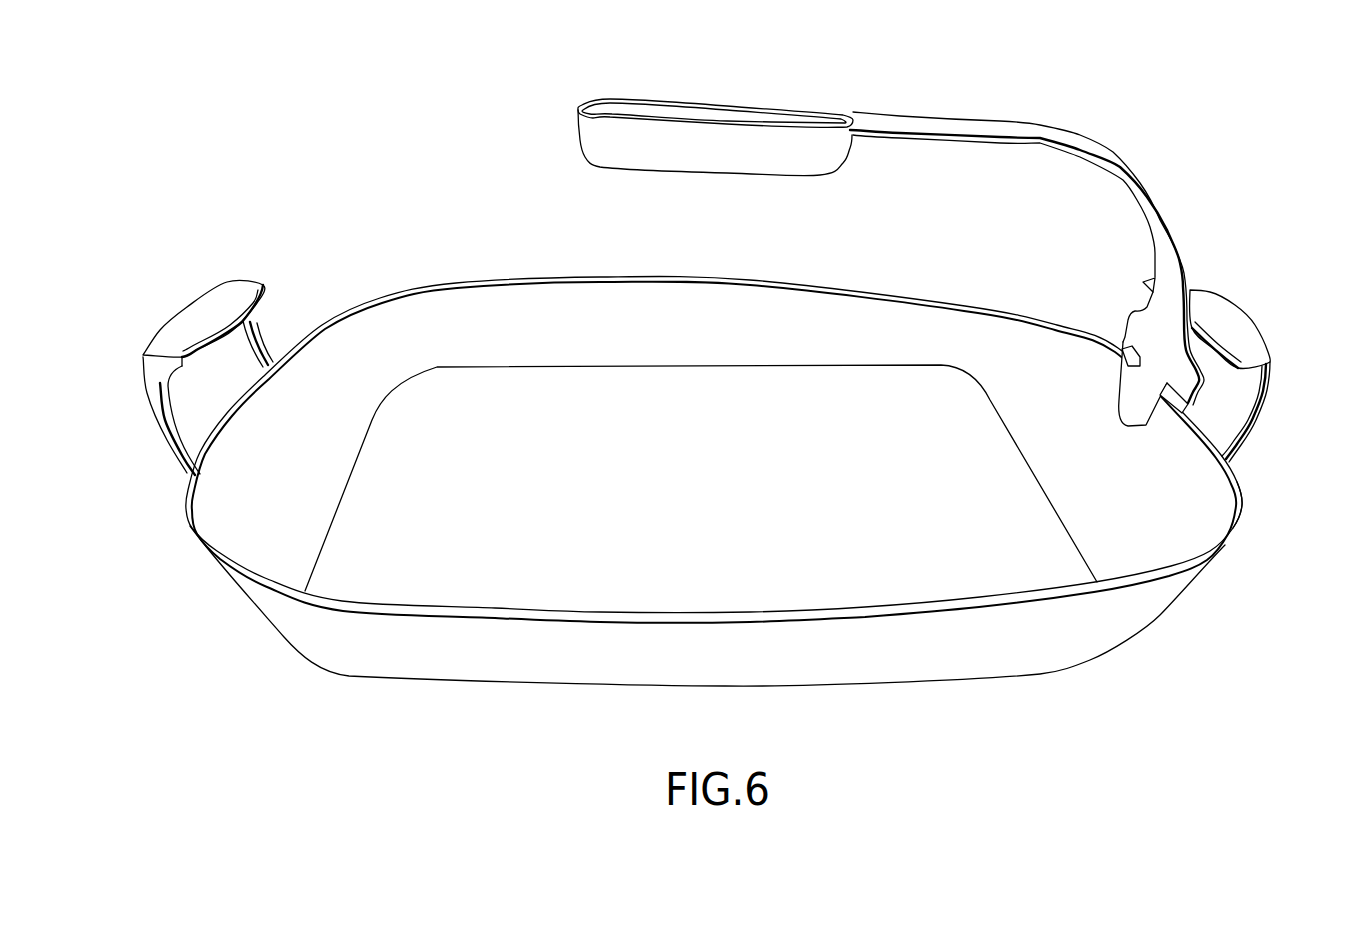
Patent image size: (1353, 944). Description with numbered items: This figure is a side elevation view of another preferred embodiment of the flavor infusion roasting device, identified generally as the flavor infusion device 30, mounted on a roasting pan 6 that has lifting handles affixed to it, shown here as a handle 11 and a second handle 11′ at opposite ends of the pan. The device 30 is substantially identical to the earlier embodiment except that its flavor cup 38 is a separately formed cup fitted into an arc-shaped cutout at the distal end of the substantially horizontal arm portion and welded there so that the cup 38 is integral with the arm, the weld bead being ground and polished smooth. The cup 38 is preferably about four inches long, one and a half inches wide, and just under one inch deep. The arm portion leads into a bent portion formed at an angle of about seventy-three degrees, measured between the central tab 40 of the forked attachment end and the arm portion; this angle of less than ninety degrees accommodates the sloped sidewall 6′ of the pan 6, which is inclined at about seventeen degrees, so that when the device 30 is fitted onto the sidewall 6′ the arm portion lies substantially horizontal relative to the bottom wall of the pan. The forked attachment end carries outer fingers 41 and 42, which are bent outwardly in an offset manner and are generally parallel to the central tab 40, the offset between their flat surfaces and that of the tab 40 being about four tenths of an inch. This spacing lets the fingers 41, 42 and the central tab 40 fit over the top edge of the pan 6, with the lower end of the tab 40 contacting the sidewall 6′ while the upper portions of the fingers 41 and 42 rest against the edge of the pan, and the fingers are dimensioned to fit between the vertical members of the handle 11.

The roasting pan 6 is at (872, 277).
The sidewall 6′ is at (1070, 345).
The handle 11 is at (245, 282).
The right handle 11′ is at (1228, 307).
The flavor infusion device 30 is at (972, 110).
The flavor cup 38 is at (652, 107).
The central tab 40 is at (1128, 416).
The outer finger 41 is at (1122, 357).
The outer finger 42 is at (1179, 411).